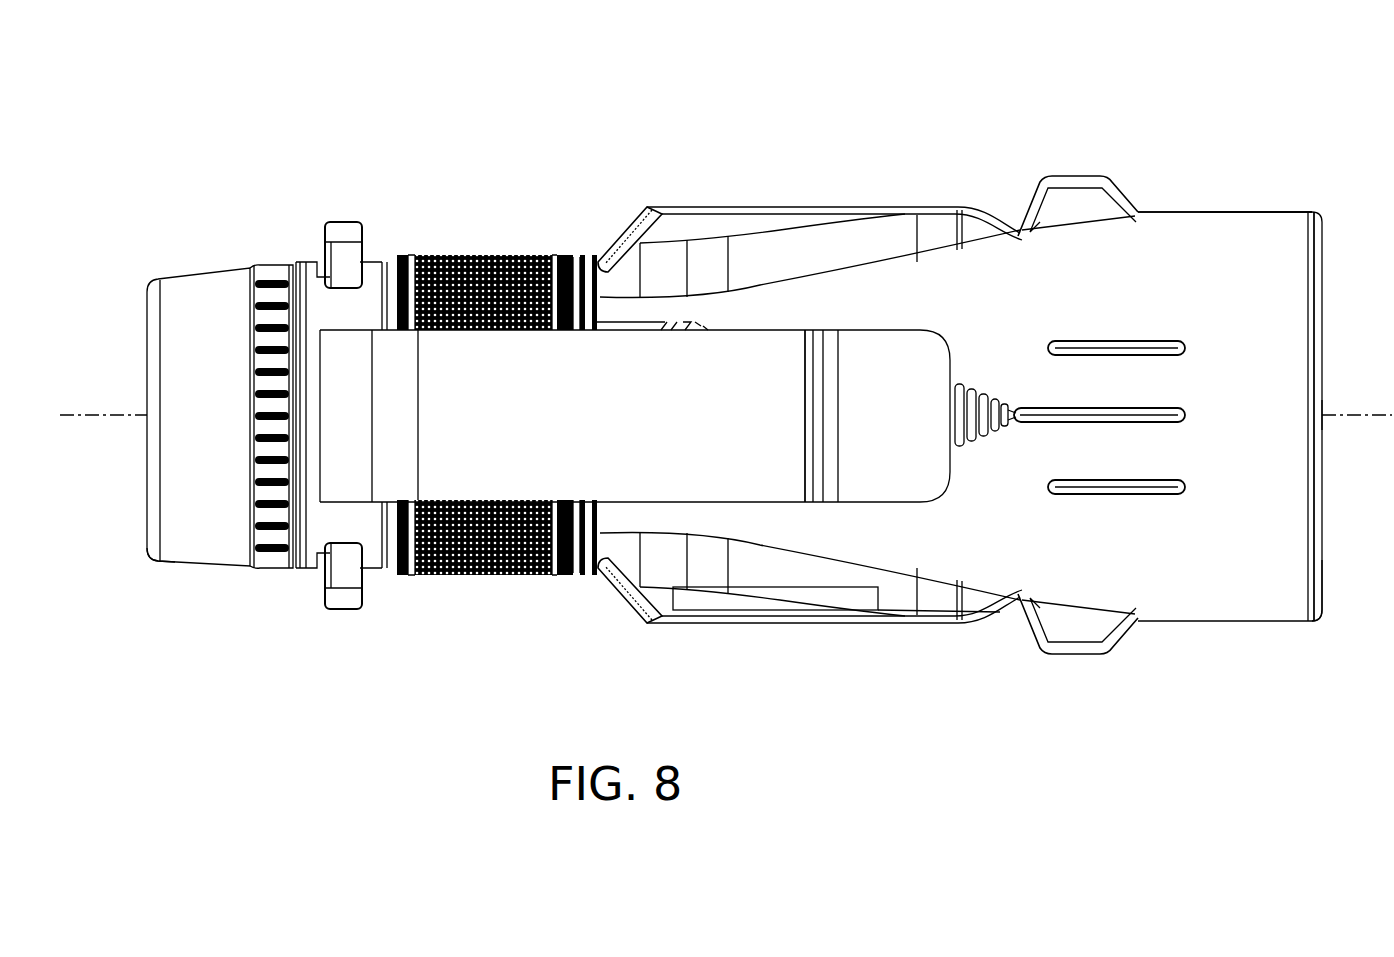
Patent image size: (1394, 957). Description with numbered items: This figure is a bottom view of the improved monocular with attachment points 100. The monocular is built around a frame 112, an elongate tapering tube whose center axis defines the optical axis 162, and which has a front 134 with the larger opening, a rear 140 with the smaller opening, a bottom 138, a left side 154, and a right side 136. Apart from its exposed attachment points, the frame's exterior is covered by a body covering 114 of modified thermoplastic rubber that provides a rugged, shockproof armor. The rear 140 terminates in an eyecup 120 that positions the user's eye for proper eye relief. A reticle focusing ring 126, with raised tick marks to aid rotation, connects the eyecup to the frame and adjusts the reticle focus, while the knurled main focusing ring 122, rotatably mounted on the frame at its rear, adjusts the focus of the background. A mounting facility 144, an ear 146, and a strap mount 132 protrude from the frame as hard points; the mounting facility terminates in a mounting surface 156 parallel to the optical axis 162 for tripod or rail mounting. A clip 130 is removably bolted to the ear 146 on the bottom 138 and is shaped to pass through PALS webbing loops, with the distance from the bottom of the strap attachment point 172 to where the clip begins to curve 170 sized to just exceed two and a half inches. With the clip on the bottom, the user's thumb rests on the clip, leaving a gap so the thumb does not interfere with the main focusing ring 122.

The monocular 100 is at (400, 72).
The frame 112 is at (1230, 598).
The body covering 114 is at (1265, 598).
The eyecup 120 is at (203, 528).
The main focusing ring 122 is at (530, 578).
The reticle focusing ring 126 is at (267, 567).
The clip 130 is at (475, 455).
The strap mount 132 is at (1080, 200).
The front 134 is at (1322, 585).
The right side 136 is at (1190, 212).
The bottom 138 is at (1268, 415).
The rear 140 is at (145, 488).
The mounting facility 144 is at (712, 207).
The ear 146 is at (343, 237).
The left side 154 is at (1183, 622).
The mounting surface 156 is at (800, 207).
The optical axis 162 is at (1352, 420).
The clip curve beginning point 170 is at (372, 508).
The strap attachment point 172 is at (805, 508).